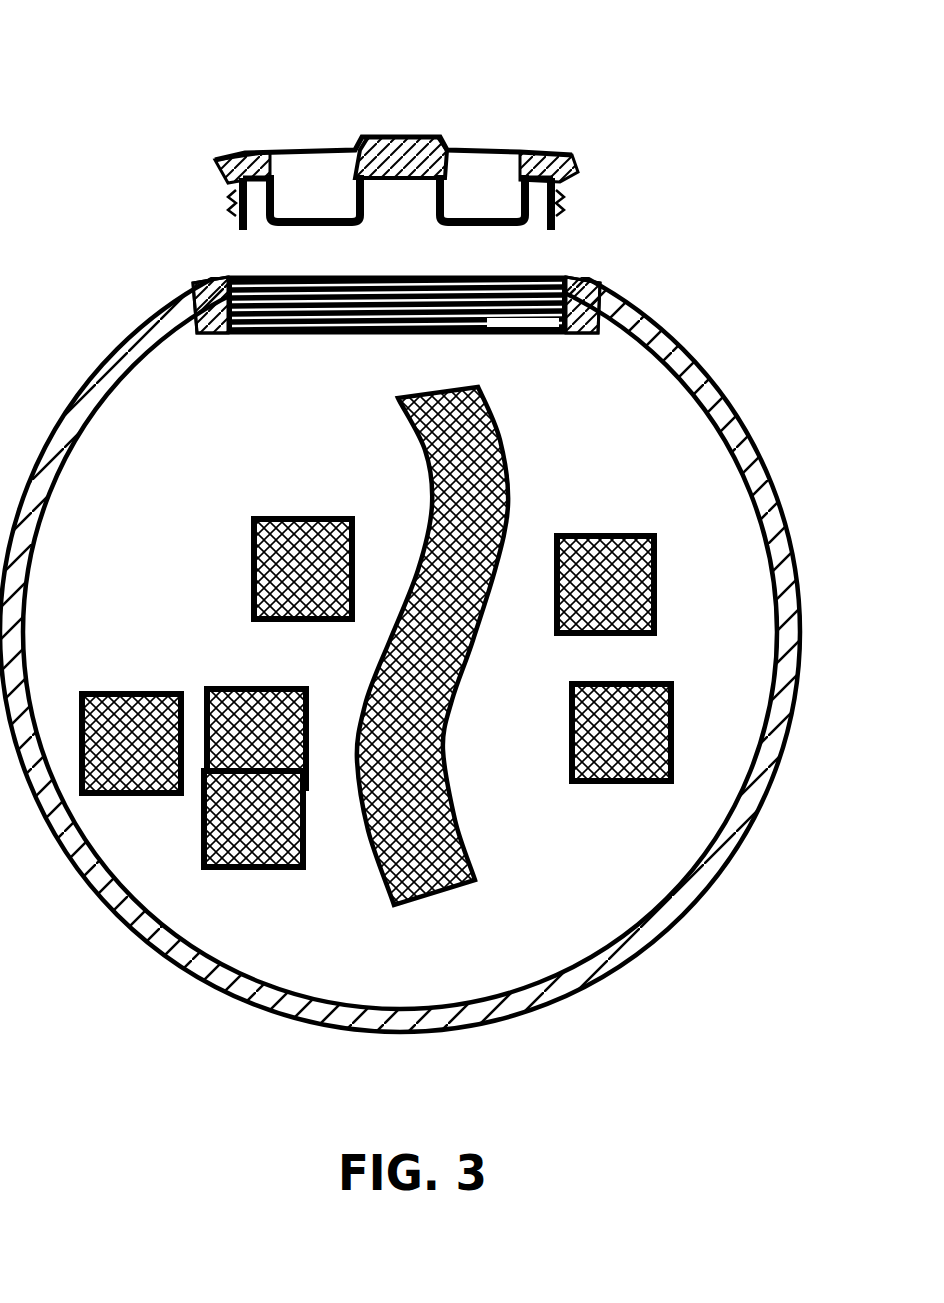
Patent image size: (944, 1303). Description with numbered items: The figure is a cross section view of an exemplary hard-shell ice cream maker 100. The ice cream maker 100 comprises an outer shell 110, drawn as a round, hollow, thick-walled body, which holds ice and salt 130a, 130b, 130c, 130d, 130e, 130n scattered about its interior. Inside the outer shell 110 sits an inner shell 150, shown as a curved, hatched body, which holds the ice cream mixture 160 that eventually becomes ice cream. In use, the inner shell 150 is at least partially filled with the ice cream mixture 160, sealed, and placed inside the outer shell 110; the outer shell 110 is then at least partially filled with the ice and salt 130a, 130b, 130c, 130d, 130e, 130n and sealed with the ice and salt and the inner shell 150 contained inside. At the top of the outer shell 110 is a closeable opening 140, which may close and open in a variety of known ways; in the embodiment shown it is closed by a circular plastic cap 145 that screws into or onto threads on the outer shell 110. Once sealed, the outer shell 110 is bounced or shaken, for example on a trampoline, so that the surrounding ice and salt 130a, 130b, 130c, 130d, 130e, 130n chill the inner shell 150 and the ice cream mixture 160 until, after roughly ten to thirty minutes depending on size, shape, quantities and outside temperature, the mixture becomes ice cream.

The ice cream maker 100 is at (138, 100).
The outer shell 110 is at (710, 385).
The closeable opening 140 is at (230, 268).
The circular plastic cap 145 is at (553, 157).
The inner shell 150 is at (396, 400).
The ice cream mixture 160 is at (462, 432).
The ice and salt 130a is at (305, 517).
The ice and salt 130b is at (160, 710).
The ice and salt 130c is at (268, 715).
The ice and salt 130d is at (283, 850).
The ice and salt 130e is at (612, 555).
The ice and salt 130n is at (600, 772).